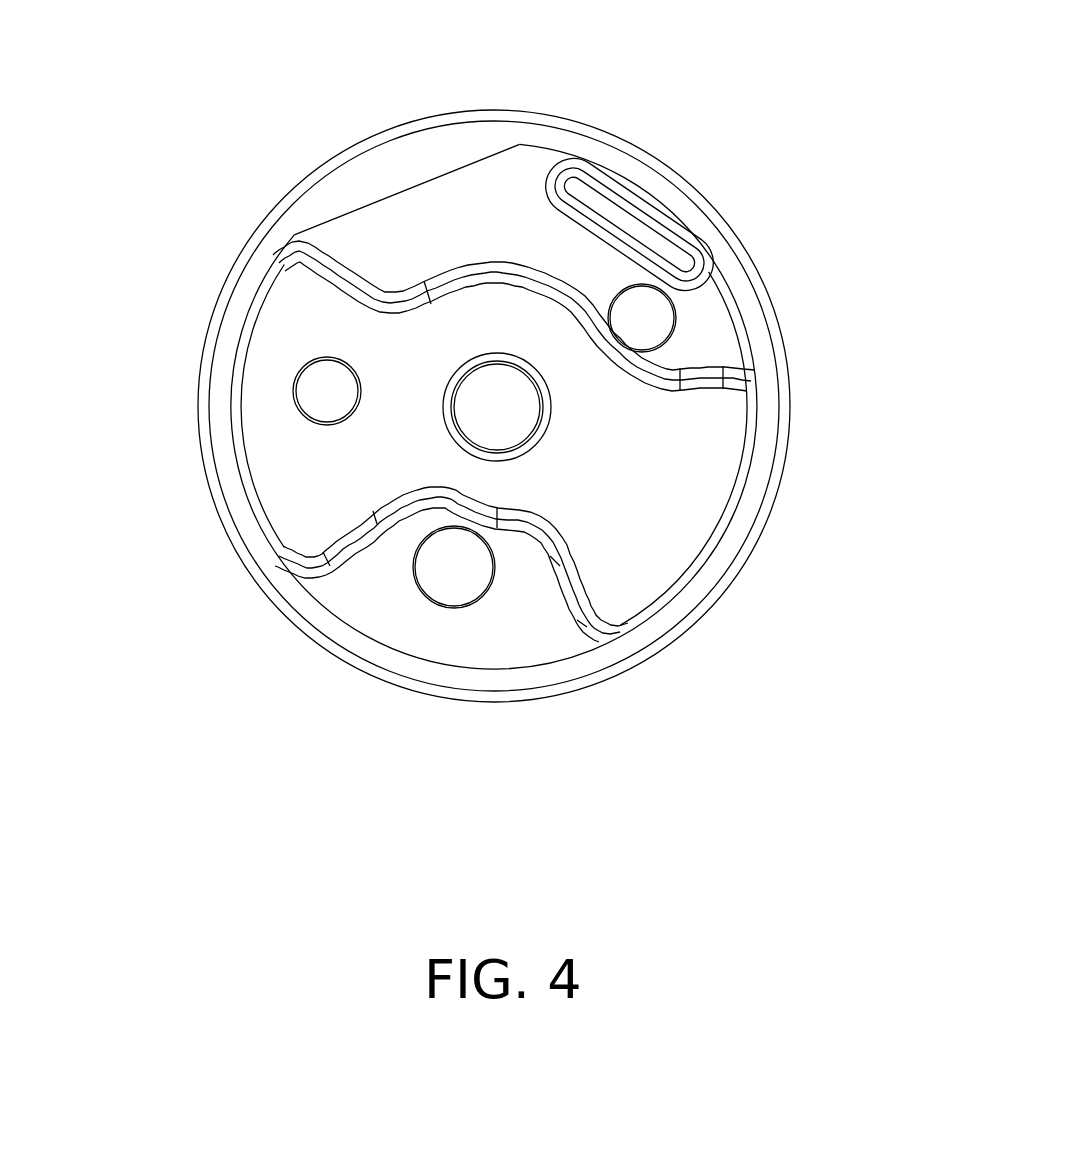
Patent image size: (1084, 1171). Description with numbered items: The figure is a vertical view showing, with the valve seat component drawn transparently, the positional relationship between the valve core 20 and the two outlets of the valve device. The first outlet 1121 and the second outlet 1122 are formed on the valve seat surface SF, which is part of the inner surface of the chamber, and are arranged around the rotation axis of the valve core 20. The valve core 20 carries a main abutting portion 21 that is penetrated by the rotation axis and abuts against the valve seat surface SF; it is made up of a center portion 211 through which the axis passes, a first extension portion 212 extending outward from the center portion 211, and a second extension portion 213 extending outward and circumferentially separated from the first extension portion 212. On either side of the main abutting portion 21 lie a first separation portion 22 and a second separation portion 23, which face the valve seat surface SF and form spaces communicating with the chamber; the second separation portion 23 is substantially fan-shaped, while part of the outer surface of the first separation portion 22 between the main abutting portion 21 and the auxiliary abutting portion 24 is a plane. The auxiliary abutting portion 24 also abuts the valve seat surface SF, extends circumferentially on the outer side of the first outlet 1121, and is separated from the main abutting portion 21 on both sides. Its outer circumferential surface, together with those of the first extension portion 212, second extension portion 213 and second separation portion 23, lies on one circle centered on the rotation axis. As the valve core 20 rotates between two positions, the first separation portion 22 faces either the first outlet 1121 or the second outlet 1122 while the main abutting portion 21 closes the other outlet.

The valve core 20 is at (765, 440).
The main abutting portion 21 is at (735, 512).
The first separation portion 22 is at (502, 185).
The center portion 211 is at (480, 327).
The first extension portion 212 is at (640, 557).
The second extension portion 213 is at (305, 492).
The second separation portion 23 is at (380, 607).
The auxiliary abutting portion 24 is at (655, 218).
The first outlet 1121 is at (657, 320).
The second outlet 1122 is at (320, 385).
The valve seat surface SF is at (447, 141).